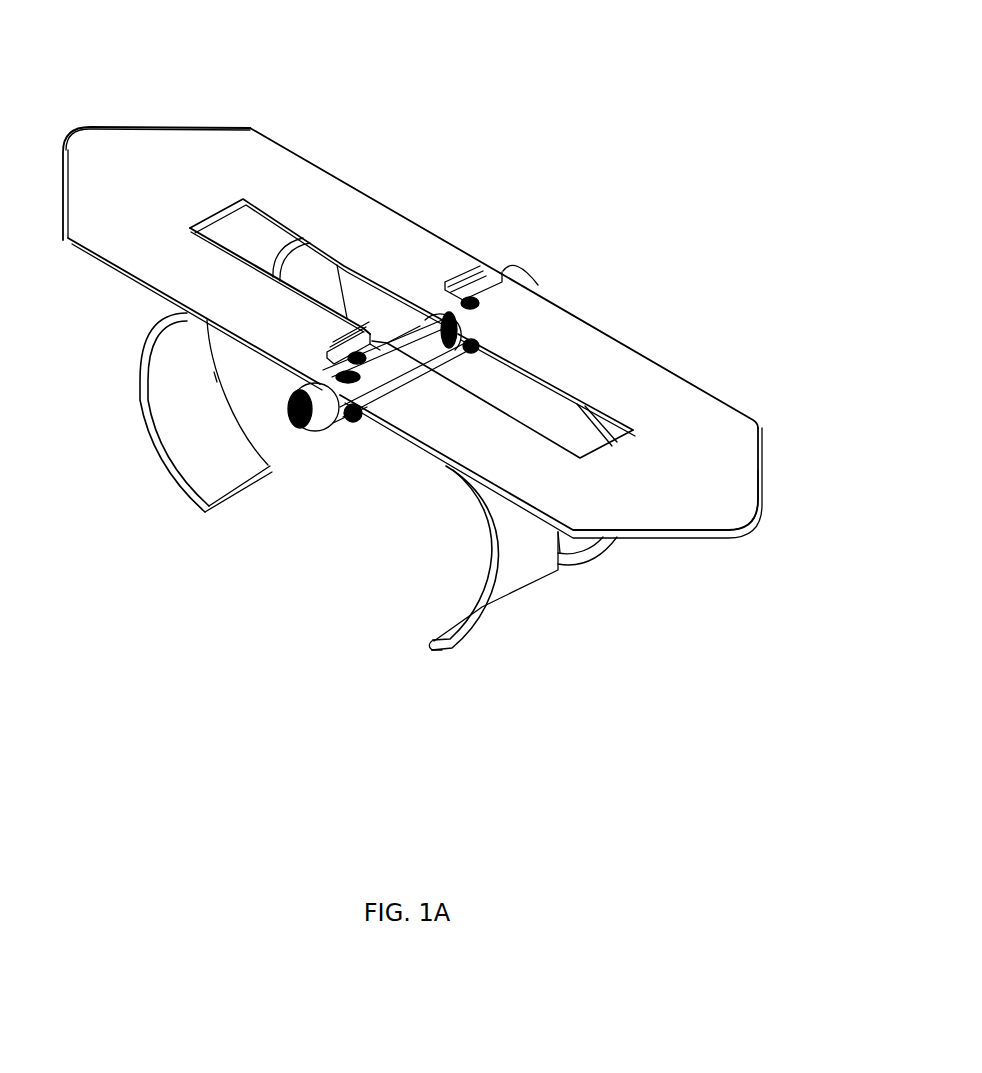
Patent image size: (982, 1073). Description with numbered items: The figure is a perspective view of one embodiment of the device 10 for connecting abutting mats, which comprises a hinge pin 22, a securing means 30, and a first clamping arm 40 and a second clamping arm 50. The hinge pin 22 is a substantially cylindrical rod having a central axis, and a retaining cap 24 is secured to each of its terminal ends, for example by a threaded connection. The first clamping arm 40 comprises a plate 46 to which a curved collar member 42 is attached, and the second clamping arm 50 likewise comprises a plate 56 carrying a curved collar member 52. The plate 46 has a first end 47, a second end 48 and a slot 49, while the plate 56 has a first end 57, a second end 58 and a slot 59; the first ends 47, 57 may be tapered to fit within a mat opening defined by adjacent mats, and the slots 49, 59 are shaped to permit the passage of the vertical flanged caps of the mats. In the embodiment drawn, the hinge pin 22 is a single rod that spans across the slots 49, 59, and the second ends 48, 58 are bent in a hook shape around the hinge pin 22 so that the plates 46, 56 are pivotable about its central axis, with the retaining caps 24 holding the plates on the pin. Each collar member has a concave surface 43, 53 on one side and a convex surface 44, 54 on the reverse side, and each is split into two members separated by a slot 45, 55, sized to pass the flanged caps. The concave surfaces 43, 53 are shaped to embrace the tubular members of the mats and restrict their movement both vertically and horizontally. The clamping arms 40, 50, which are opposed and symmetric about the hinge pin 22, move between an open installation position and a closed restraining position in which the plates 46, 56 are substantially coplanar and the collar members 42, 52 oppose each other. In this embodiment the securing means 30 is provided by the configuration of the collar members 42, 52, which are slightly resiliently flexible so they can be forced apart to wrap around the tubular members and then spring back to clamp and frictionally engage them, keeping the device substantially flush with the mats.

The device 10 is at (609, 82).
The hinge pin 22 is at (426, 347).
The retaining cap 24 is at (530, 258).
The securing means 30 is at (330, 430).
The first clamping arm 40 is at (379, 182).
The curved collar member 42 is at (182, 490).
The concave surface 43 is at (173, 428).
The convex surface 44 is at (152, 440).
The slot 45 is at (220, 376).
The plate 46 is at (270, 150).
The first end 47 is at (115, 125).
The second end 48 is at (440, 305).
The slot 49 is at (230, 227).
The second clamping arm 50 is at (674, 365).
The curved collar member 52 is at (505, 623).
The concave surface 53 is at (452, 628).
The convex surface 54 is at (495, 566).
The slot 55 is at (562, 587).
The plate 56 is at (597, 337).
The first end 57 is at (758, 490).
The second end 58 is at (380, 352).
The slot 59 is at (577, 442).